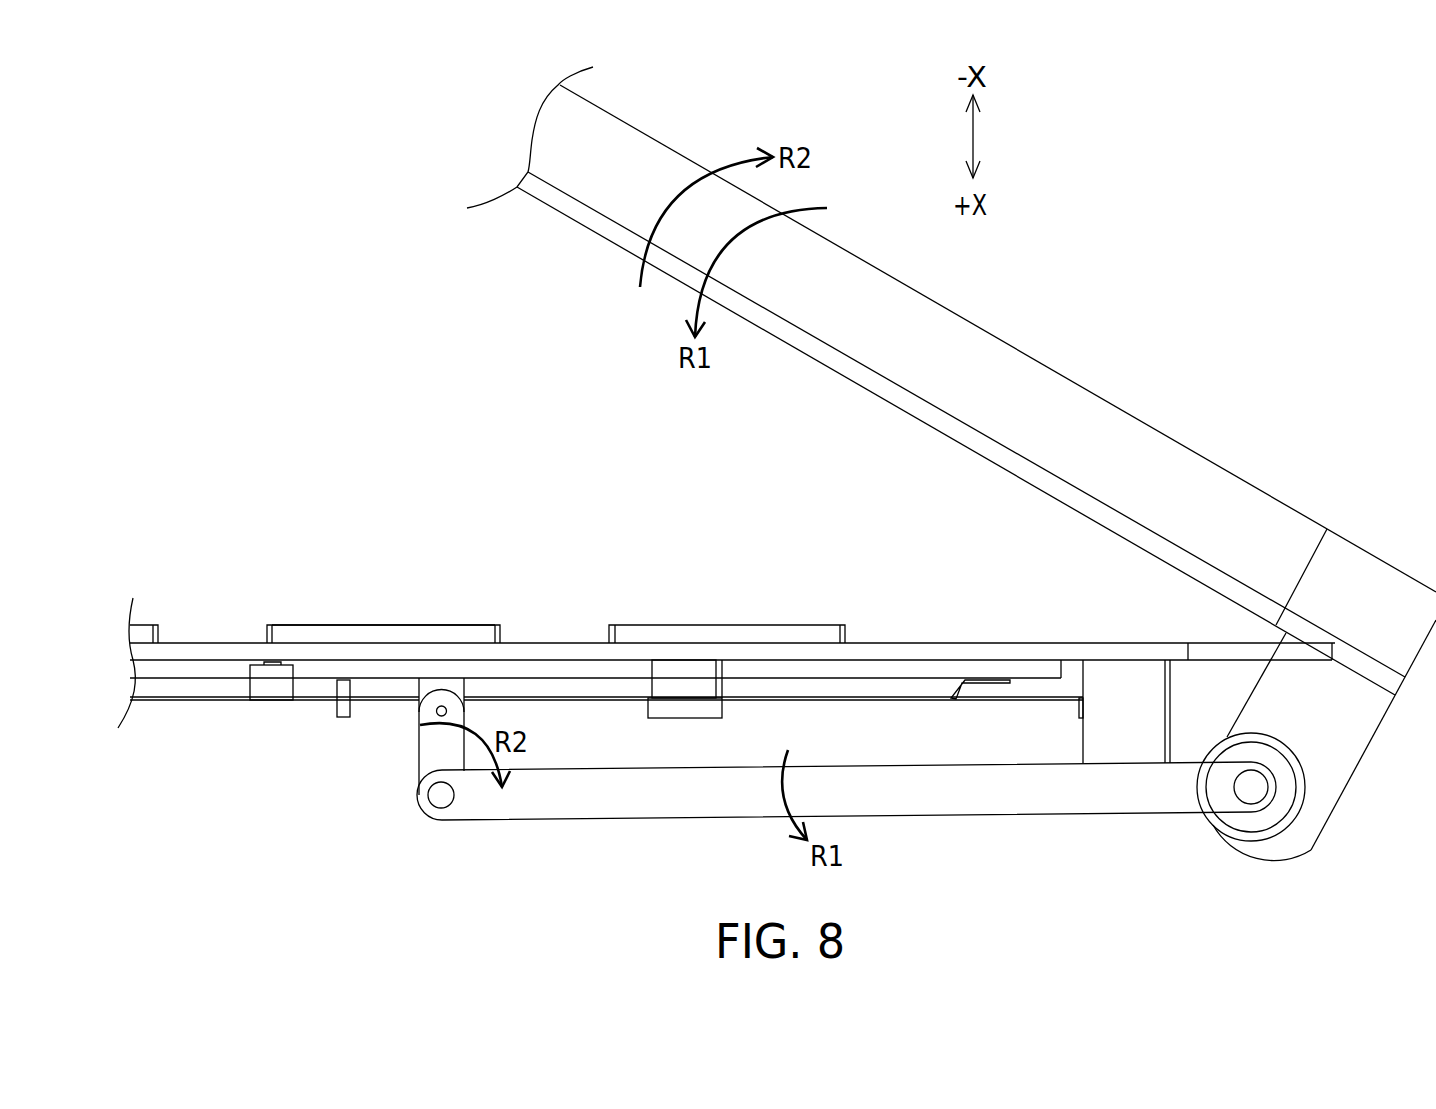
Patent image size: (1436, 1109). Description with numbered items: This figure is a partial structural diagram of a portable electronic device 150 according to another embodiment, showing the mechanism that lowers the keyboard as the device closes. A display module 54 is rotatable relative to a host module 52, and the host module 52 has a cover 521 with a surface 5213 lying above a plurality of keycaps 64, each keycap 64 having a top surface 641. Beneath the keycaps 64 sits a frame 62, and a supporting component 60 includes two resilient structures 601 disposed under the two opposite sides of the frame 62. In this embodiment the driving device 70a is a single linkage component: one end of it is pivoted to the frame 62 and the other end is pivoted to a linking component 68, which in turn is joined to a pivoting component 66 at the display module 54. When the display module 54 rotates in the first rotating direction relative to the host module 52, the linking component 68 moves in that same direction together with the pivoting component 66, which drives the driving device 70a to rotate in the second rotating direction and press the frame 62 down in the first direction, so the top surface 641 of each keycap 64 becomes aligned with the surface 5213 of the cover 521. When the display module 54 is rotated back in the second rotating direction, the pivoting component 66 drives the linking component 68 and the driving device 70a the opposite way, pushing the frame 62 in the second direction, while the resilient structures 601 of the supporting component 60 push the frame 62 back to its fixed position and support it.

The display module 54 is at (548, 142).
The portable electronic device 150 is at (1180, 170).
The host module 52 is at (726, 637).
The cover 521 is at (920, 650).
The surface of the cover 5213 is at (202, 640).
The keycap 64 is at (345, 630).
The top surface of the keycap 641 is at (422, 627).
The frame 62 is at (465, 667).
The supporting component 60 is at (810, 700).
The resilient structure 601 is at (985, 680).
The driving device 70a is at (424, 760).
The linking component 68 is at (978, 798).
The pivoting component 66 is at (1283, 808).